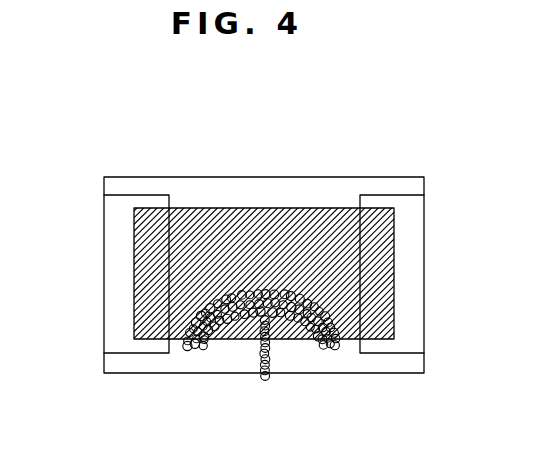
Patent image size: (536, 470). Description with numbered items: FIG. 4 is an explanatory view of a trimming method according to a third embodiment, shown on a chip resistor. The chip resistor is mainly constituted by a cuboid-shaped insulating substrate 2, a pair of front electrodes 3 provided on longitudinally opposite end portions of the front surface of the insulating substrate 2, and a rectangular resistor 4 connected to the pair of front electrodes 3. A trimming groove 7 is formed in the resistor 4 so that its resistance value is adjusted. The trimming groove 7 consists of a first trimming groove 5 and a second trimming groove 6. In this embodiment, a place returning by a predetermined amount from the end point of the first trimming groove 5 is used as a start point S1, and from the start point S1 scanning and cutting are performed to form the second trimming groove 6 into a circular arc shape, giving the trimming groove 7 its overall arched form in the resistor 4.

The insulating substrate 2 is at (154, 176).
The front electrode 3 is at (110, 268).
The resistor 4 is at (323, 208).
The first trimming groove 5 is at (247, 345).
The second trimming groove 6 is at (222, 342).
The trimming groove 7 is at (261, 372).
The start point S1 is at (281, 370).